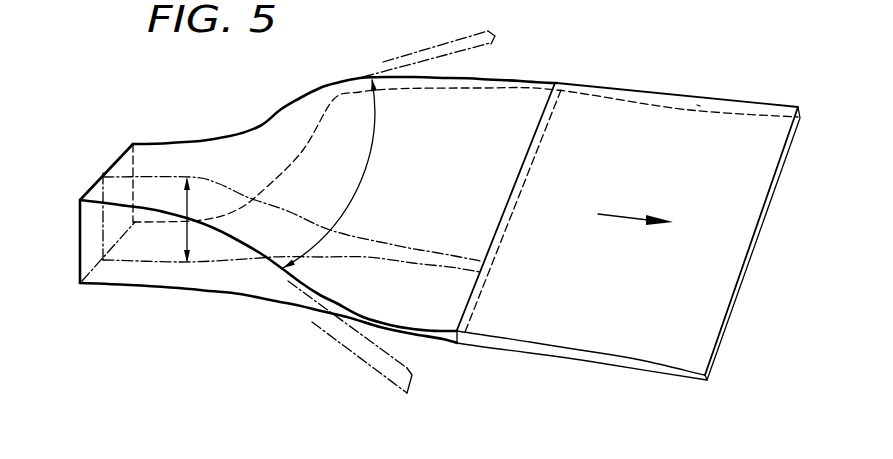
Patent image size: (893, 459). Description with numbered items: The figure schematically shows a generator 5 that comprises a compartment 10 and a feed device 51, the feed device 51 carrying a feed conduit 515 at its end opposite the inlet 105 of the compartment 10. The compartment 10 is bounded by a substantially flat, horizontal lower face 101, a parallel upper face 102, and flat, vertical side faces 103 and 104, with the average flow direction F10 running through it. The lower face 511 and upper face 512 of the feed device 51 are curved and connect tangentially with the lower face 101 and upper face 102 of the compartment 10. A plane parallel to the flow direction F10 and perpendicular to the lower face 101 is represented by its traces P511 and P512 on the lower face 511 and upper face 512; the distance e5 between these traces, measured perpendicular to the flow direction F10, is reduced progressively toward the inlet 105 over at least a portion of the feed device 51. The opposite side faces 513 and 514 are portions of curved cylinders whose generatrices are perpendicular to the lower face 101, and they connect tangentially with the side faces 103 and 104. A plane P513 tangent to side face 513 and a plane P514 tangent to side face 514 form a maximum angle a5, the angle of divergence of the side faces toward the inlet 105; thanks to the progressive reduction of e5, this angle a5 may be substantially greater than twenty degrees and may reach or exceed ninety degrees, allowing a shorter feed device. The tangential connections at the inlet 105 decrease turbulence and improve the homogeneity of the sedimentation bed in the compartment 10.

The generator 5 is at (575, 82).
The compartment 10 is at (768, 99).
The feed device 51 is at (386, 54).
The lower face 101 is at (660, 376).
The upper face 102 is at (627, 359).
The side face 103 is at (595, 358).
The side face 104 is at (697, 105).
The compartment inlet 105 is at (530, 145).
The lower face 511 is at (403, 338).
The upper face 512 is at (450, 328).
The side face 513 is at (270, 285).
The side face 514 is at (335, 99).
The feed conduit 515 is at (117, 162).
The trace of plane P51 on lower face P511 is at (417, 268).
The trace of plane P51 on upper face P512 is at (387, 246).
The tangent plane P513 is at (362, 347).
The tangent plane P514 is at (462, 36).
The distance e5 is at (198, 220).
The angle of divergence a5 is at (344, 173).
The average flow direction F10 is at (635, 206).